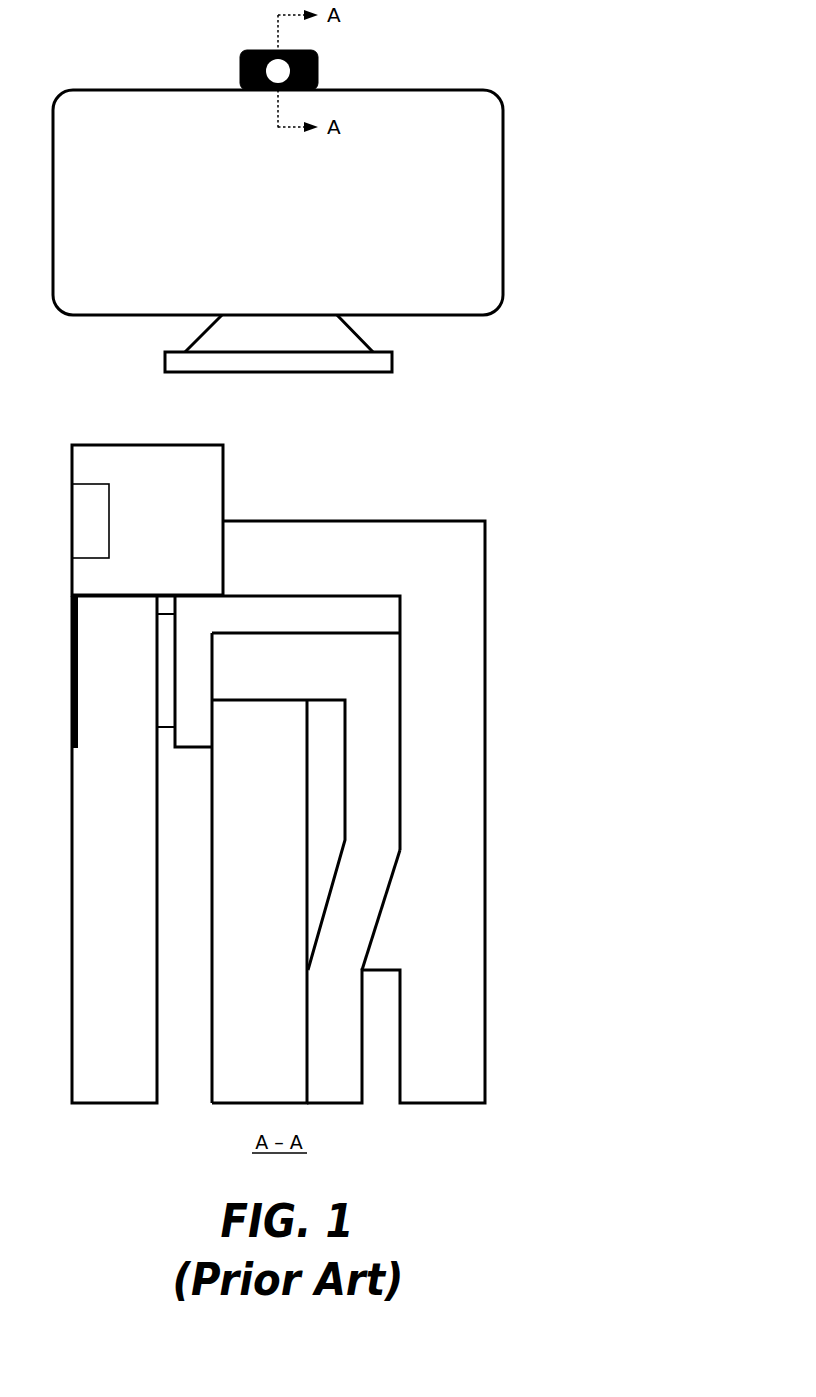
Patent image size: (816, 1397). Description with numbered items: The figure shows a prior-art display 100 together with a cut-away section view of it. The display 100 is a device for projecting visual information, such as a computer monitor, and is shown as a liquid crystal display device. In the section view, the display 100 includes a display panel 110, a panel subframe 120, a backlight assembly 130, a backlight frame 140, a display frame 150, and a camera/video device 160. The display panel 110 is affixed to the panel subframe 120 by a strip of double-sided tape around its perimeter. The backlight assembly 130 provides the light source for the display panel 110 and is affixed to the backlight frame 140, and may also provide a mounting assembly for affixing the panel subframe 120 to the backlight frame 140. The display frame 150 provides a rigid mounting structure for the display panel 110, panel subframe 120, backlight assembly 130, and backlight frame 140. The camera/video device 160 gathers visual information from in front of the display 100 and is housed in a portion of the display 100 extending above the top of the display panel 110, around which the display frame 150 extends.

The display 100 is at (105, 90).
The display panel 110 is at (97, 987).
The panel subframe 120 is at (378, 624).
The backlight assembly 130 is at (243, 976).
The backlight frame 140 is at (290, 687).
The display frame 150 is at (426, 987).
The camera/video device 160 is at (253, 50).